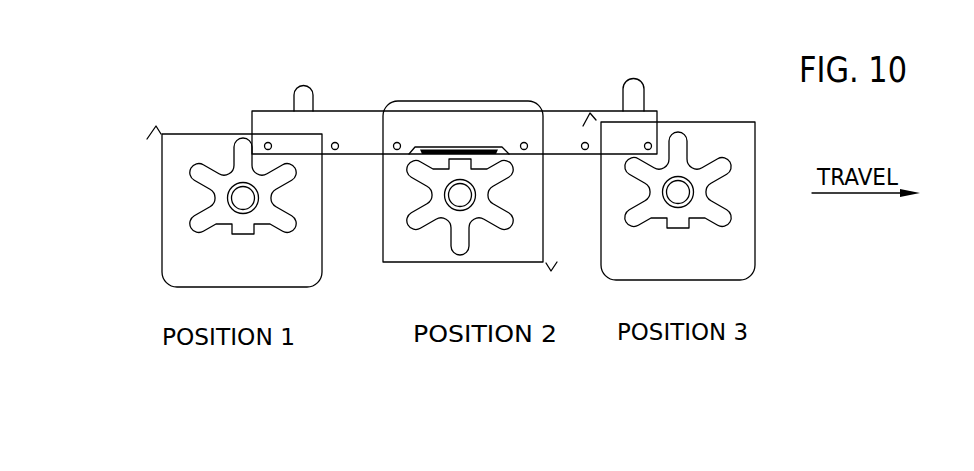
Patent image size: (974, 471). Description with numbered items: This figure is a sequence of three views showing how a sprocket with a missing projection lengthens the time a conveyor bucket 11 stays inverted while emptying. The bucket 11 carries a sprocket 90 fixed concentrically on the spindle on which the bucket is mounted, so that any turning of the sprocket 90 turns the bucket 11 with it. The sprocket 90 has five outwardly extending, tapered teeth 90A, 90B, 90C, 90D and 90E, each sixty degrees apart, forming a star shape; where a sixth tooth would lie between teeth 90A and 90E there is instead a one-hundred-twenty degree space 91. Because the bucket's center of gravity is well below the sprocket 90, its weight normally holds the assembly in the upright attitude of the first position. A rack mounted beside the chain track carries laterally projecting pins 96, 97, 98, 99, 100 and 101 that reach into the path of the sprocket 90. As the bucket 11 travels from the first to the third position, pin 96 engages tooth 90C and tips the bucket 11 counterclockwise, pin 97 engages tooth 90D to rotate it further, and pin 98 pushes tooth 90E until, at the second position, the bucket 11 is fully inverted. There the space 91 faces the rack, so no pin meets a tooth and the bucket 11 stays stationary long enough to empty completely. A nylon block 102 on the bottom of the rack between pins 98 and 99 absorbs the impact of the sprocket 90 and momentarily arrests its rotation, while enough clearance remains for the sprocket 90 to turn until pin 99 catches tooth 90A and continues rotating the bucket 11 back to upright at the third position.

The bucket 11 is at (302, 276).
The sprocket 90 is at (240, 198).
The tooth 90A is at (192, 229).
The tooth 90B is at (190, 172).
The tooth 90C is at (242, 140).
The tooth 90D is at (296, 173).
The tooth 90E is at (406, 167).
The space 91 is at (463, 140).
The pin 96 is at (268, 142).
The pin 97 is at (335, 142).
The pin 98 is at (397, 142).
The pin 99 is at (524, 142).
The pin 100 is at (586, 142).
The pin 101 is at (650, 142).
The nylon block 102 is at (448, 146).